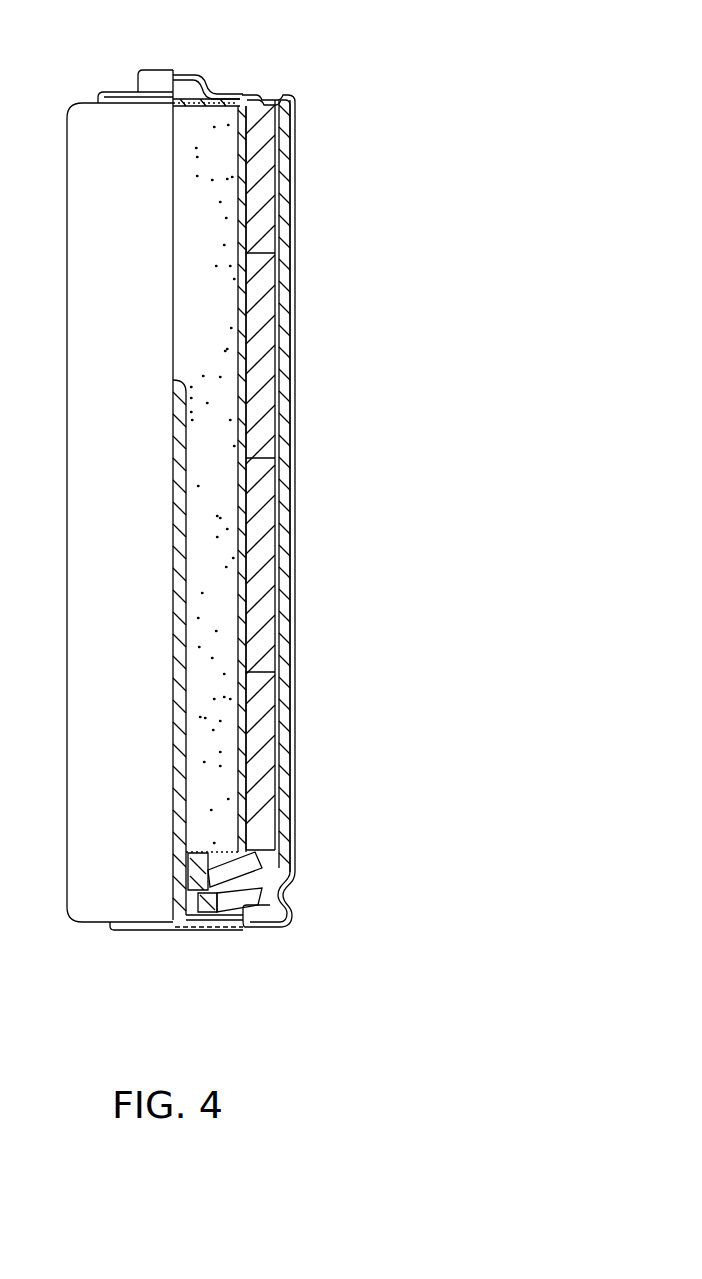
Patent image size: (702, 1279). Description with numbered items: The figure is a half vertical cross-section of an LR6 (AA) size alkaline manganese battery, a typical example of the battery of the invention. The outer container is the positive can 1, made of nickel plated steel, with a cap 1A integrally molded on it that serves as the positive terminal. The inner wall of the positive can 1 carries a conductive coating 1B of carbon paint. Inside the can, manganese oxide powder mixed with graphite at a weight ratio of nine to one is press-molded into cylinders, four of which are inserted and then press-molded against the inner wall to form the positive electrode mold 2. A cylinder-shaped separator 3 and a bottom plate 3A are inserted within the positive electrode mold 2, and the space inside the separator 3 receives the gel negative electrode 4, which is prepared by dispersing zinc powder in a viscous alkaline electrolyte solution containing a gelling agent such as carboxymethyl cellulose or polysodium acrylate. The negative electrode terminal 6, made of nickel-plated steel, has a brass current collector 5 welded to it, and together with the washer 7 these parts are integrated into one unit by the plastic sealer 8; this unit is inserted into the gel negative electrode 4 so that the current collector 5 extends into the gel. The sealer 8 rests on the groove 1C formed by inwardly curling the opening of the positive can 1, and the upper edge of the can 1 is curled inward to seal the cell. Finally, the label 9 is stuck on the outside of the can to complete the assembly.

The positive can 1 is at (290, 277).
The cap 1A is at (217, 78).
The conductive coating 1B is at (287, 178).
The groove 1C is at (287, 879).
The positive electrode mold 2 is at (263, 387).
The separator 3 is at (251, 518).
The bottom plate 3A is at (195, 109).
The gel negative electrode 4 is at (216, 619).
The current collector 5 is at (181, 743).
The negative electrode terminal 6 is at (249, 933).
The washer 7 is at (263, 907).
The sealer 8 is at (265, 851).
The label 9 is at (297, 222).